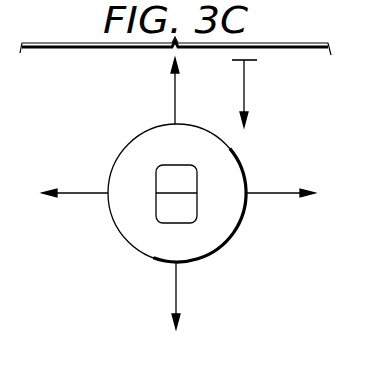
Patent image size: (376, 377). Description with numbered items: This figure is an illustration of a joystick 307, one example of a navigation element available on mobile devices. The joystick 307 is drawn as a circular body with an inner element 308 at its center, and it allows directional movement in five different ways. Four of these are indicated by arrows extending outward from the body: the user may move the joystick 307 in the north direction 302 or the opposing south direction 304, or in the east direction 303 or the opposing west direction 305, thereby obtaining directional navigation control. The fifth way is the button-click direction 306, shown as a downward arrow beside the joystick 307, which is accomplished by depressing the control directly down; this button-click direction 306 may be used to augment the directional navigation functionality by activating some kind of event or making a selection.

The north direction 302 is at (173, 98).
The east direction 303 is at (272, 193).
The south direction 304 is at (174, 290).
The west direction 305 is at (80, 193).
The button-click direction 306 is at (245, 88).
The joystick 307 is at (229, 246).
The rounded rectangular element 308 is at (156, 204).